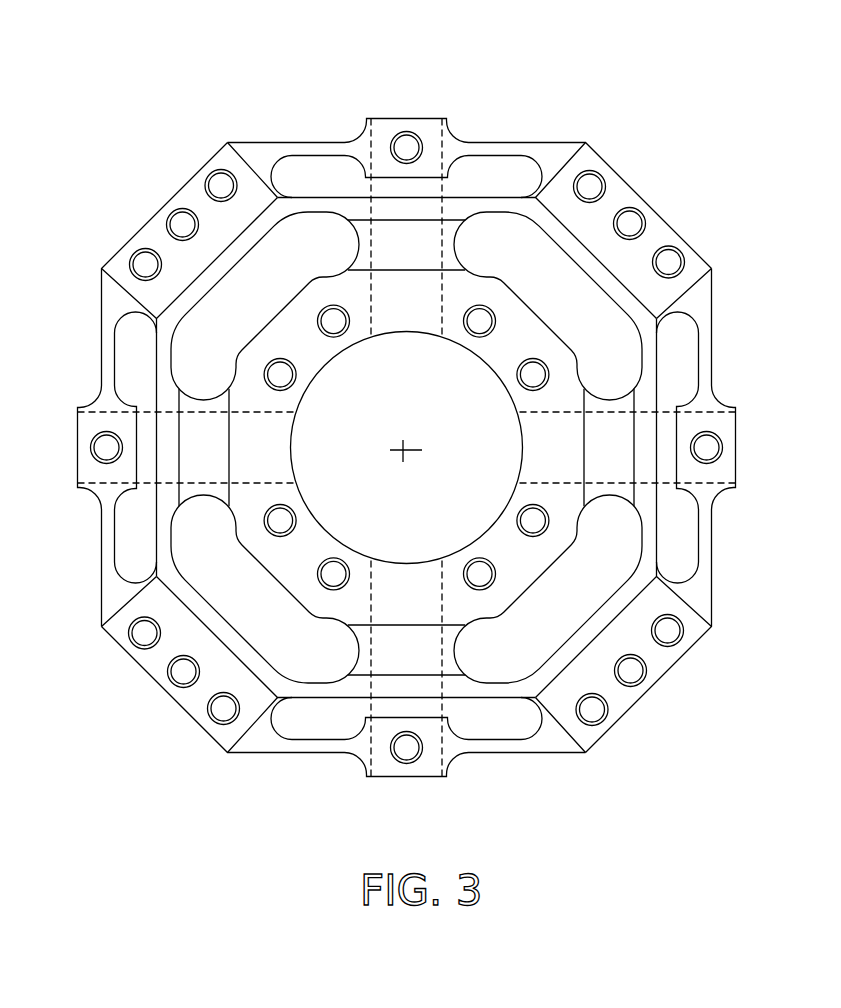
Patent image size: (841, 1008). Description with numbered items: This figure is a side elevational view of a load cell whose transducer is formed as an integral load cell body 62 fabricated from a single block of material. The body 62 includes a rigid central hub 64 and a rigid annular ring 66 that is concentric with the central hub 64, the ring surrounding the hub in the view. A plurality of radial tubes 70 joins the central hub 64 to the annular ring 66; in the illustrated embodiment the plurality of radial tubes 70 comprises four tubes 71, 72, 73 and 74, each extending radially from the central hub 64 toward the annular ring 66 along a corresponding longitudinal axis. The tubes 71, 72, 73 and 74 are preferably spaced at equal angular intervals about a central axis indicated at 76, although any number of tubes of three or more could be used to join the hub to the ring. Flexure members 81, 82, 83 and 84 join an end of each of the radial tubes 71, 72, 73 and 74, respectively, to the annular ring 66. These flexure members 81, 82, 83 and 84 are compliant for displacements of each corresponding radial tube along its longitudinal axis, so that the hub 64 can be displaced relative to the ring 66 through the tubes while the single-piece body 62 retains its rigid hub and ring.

The load cell body 62 is at (663, 163).
The central hub 64 is at (543, 320).
The annular ring 66 is at (703, 252).
The plurality of radial tubes 70 is at (508, 233).
The tube 71 is at (455, 648).
The tube 72 is at (200, 495).
The tube 73 is at (355, 241).
The tube 74 is at (607, 398).
The central axis 76 is at (405, 448).
The flexure member 81 is at (342, 717).
The flexure member 82 is at (145, 383).
The flexure member 83 is at (462, 185).
The flexure member 84 is at (667, 377).